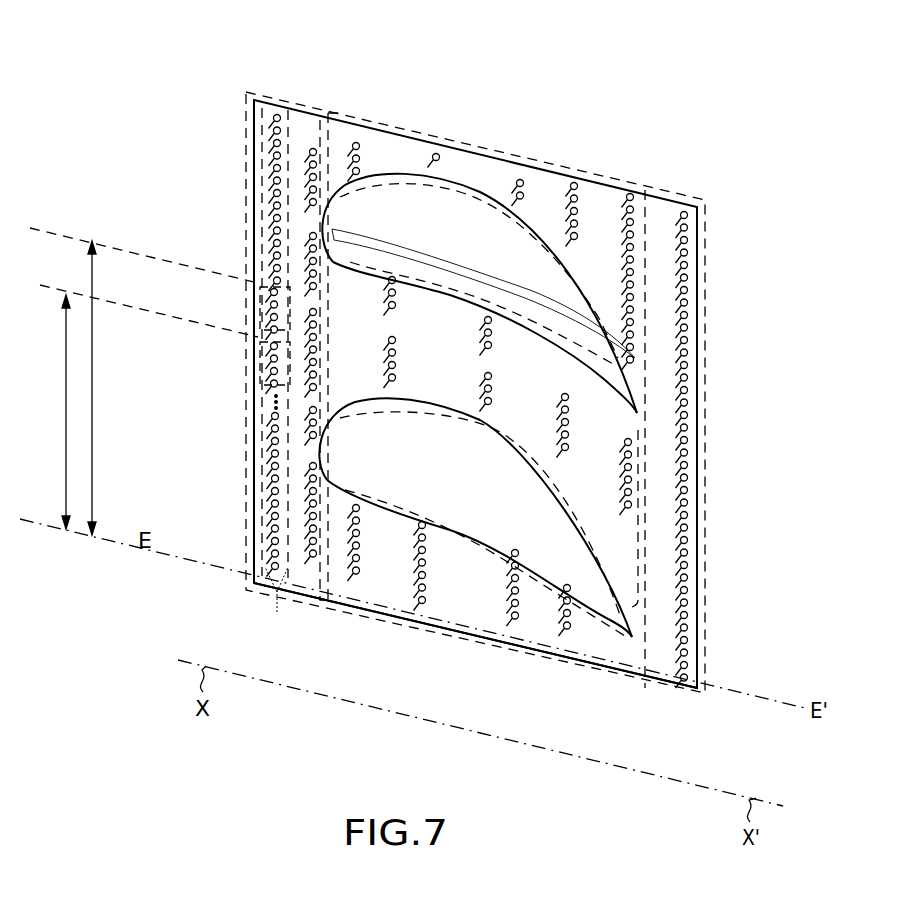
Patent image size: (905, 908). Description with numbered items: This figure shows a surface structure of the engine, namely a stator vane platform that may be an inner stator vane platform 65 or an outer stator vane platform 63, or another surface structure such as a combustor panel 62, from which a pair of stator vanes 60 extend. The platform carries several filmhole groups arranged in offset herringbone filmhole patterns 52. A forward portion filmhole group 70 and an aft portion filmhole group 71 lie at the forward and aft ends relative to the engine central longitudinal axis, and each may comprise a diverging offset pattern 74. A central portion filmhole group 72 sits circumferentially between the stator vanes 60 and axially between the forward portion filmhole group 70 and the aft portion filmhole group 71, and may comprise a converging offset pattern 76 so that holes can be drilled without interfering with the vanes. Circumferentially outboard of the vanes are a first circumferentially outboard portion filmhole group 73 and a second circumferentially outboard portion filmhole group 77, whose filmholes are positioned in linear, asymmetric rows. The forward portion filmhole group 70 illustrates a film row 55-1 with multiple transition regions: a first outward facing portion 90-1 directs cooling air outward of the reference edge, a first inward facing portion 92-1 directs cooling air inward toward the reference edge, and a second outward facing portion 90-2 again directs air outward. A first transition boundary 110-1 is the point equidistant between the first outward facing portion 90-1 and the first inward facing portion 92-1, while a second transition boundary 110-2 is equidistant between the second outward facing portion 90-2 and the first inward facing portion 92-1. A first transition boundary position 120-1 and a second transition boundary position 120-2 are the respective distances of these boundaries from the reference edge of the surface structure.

The forward portion filmhole group 70 is at (254, 94).
The aft portion filmhole group 71 is at (679, 690).
The first circumferentially outboard portion filmhole group 73 is at (381, 130).
The second circumferentially outboard portion filmhole group 77 is at (411, 623).
The diverging offset pattern 74 is at (323, 111).
The offset herringbone filmhole pattern 52 is at (705, 205).
The converging offset pattern 76 is at (468, 275).
The central portion filmhole group 72 is at (378, 412).
The stator vane 60 is at (345, 205).
The combustor panel 62 is at (477, 378).
The outer stator vane platform 63 is at (638, 439).
The inner stator vane platform 65 is at (559, 111).
The first outward facing portion 90-1 is at (258, 139).
The second outward facing portion 90-2 is at (260, 392).
The first inward facing portion 92-1 is at (259, 300).
The first transition boundary 110-1 is at (263, 281).
The second transition boundary 110-2 is at (263, 336).
The first transition boundary position 120-1 is at (92, 240).
The second transition boundary position 120-2 is at (63, 292).
The film row 55-1 is at (278, 603).